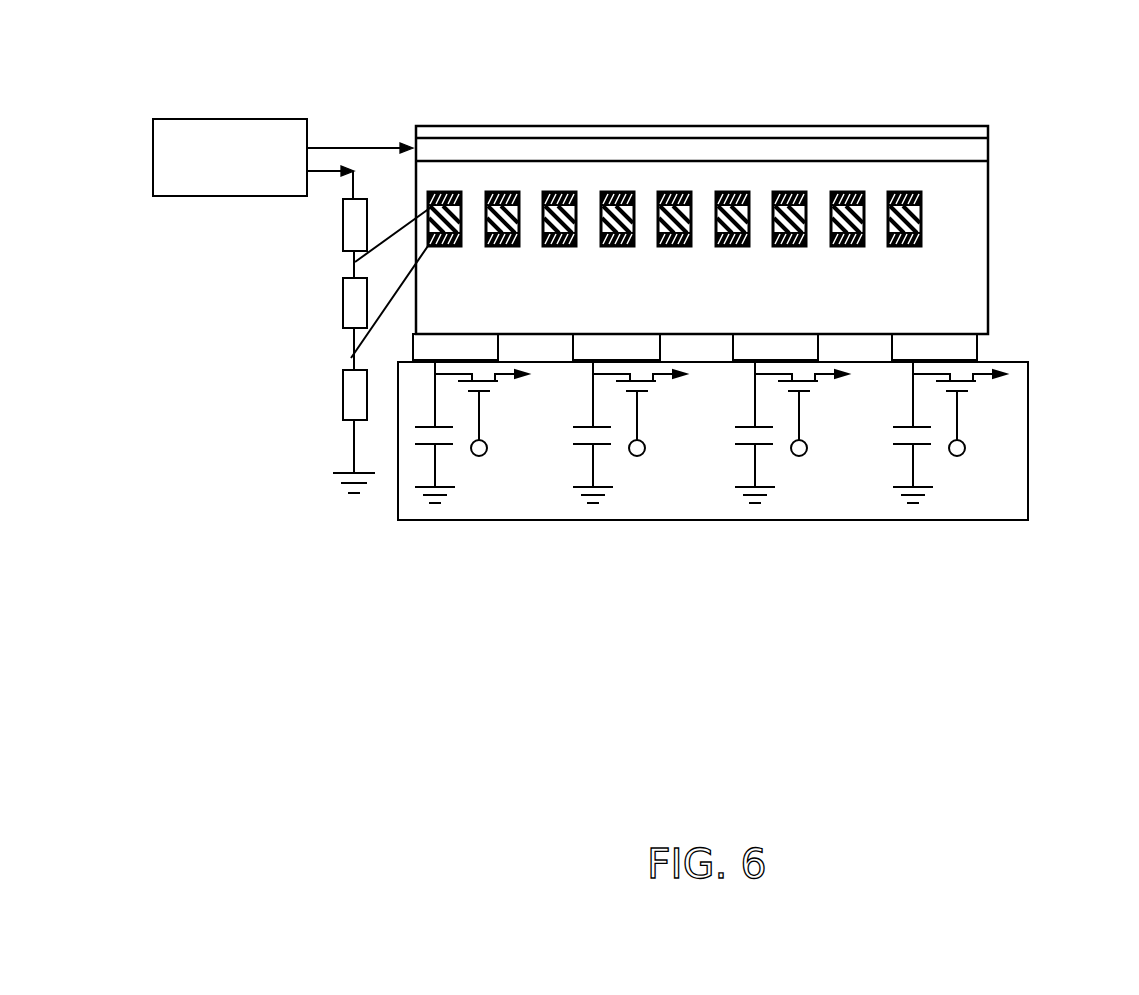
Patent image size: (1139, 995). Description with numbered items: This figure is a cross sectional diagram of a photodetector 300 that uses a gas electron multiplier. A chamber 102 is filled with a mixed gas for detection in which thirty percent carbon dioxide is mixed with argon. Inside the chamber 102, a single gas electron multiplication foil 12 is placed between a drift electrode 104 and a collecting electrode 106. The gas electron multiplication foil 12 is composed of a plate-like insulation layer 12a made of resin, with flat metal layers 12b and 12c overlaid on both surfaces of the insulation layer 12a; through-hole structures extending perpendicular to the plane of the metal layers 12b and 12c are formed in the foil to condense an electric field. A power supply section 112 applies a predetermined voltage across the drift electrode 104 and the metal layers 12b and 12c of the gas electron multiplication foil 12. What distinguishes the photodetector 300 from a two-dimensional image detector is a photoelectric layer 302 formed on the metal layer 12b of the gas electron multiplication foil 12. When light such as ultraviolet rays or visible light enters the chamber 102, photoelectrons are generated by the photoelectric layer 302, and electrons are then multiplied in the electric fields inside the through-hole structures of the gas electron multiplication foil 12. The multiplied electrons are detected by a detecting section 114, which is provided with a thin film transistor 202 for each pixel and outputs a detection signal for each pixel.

The photodetector 300 is at (736, 49).
The photoelectric layer 302 is at (993, 175).
The drift electrode 104 is at (976, 149).
The gas electron multiplication foil 12 is at (763, 175).
The metal layer 12b is at (993, 211).
The insulation layer 12a is at (993, 233).
The metal layer 12c is at (992, 262).
The chamber 102 is at (988, 312).
The collecting electrode 106 is at (975, 345).
The power supply section 112 is at (218, 196).
The detecting section 114 is at (713, 485).
The thin film transistor 202 is at (661, 430).